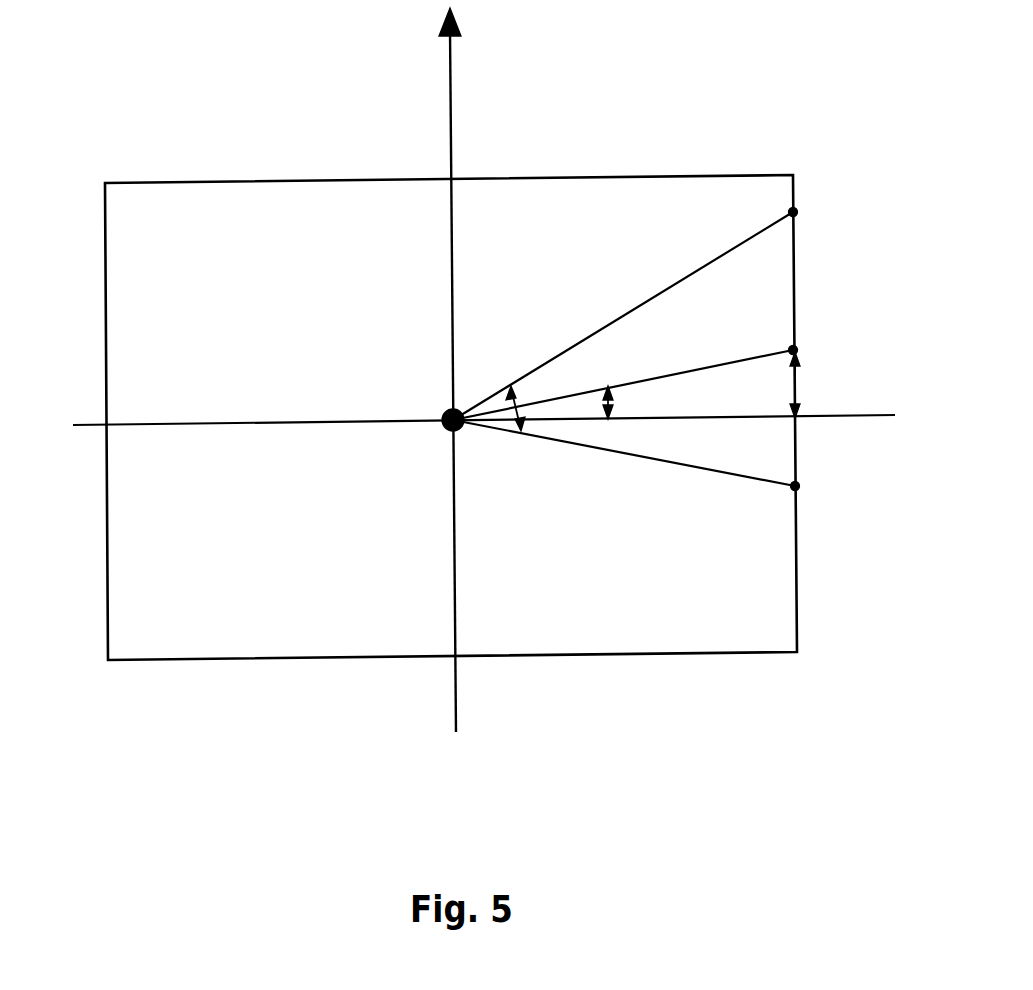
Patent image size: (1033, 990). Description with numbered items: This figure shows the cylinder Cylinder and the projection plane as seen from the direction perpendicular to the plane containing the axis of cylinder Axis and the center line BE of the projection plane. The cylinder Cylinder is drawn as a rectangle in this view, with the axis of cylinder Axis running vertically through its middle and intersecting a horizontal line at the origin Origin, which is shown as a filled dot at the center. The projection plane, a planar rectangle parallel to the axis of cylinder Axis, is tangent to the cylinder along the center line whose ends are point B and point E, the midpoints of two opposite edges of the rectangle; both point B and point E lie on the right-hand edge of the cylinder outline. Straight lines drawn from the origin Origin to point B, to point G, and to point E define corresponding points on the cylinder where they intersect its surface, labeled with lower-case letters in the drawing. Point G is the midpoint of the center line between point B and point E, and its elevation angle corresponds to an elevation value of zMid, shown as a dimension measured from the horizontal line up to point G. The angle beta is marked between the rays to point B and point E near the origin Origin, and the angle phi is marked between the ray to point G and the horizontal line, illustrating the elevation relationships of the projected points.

The cylinder Cylinder is at (97, 213).
The axis of cylinder Axis is at (484, 368).
The origin Origin is at (436, 428).
The point B is at (640, 299).
The point G is at (642, 363).
The point E is at (639, 468).
The element zMid is at (833, 385).
The angle beta is at (528, 405).
The angle phi is at (621, 400).